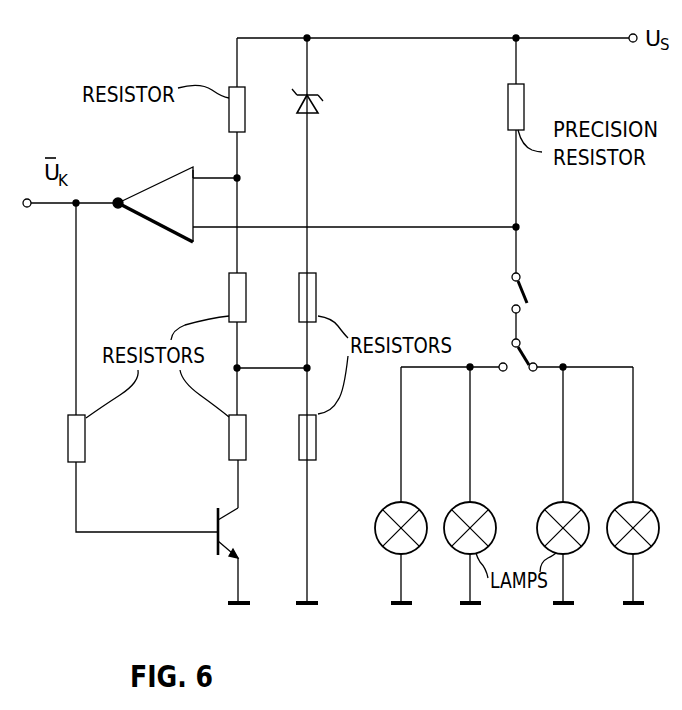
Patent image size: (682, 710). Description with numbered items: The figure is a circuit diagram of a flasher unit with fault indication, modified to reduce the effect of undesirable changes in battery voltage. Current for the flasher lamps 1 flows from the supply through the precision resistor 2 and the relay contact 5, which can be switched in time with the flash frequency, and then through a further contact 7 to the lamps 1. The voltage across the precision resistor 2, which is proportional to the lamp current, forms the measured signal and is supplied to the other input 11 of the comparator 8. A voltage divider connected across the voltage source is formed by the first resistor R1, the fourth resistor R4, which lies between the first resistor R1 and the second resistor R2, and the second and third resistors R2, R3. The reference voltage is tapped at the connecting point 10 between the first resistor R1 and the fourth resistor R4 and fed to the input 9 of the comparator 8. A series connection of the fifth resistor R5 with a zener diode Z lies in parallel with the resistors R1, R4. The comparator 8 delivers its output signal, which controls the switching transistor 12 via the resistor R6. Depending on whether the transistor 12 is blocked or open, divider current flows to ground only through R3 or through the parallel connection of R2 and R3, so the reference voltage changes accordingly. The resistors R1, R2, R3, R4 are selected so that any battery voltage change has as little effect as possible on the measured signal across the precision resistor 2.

The flasher lamps 1 is at (398, 510).
The precision resistor 2 is at (523, 108).
The relay contact 5 is at (528, 292).
The switch 7 is at (531, 354).
The comparator 8 is at (158, 195).
The input 9 is at (197, 178).
The connecting point 10 is at (240, 178).
The other input 11 is at (195, 231).
The switching transistor 12 is at (219, 543).
The zener diode Z is at (319, 320).
The first resistor R1 is at (229, 101).
The second resistor R2 is at (229, 431).
The third resistor R3 is at (316, 437).
The fourth resistor R4 is at (229, 289).
The fifth resistor R5 is at (316, 296).
The resistor R6 is at (85, 440).